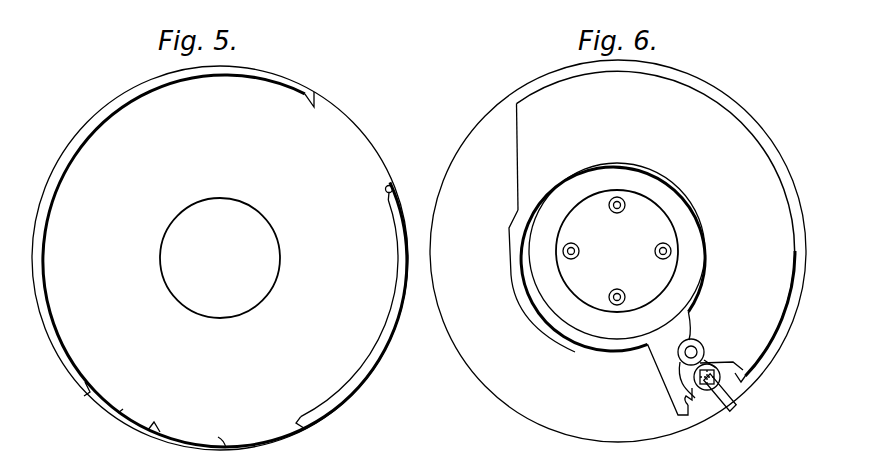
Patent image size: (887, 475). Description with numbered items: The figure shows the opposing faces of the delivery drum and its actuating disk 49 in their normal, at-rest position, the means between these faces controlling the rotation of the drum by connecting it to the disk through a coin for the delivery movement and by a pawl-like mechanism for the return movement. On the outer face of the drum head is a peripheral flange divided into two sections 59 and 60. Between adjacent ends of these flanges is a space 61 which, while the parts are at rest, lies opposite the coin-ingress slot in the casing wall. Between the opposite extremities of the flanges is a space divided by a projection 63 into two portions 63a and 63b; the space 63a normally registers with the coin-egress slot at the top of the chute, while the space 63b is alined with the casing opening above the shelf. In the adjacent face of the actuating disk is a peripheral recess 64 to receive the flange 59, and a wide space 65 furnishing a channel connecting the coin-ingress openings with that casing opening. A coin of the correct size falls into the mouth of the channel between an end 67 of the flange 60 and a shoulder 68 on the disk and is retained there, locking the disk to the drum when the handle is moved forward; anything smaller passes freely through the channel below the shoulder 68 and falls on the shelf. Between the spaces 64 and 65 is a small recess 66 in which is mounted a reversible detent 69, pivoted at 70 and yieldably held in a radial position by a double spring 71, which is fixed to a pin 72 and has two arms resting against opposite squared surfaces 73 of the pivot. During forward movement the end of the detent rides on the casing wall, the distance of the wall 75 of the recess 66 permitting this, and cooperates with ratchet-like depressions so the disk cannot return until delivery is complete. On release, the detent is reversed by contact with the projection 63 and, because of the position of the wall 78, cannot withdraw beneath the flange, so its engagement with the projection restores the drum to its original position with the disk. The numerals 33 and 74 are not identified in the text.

In FIG. 5, the band end notch 33 is at (306, 437).
In FIG. 5, the flange section 59 is at (90, 132).
In FIG. 5, the flange section 60 is at (383, 352).
In FIG. 5, the space 61 is at (362, 150).
In FIG. 5, the projection 63 is at (158, 427).
In FIG. 5, the space 63a is at (121, 410).
In FIG. 5, the space 63b is at (230, 454).
In FIG. 5, the end of flange 67 is at (392, 186).
In FIG. 5, the band step 74 is at (90, 388).
In FIG. 6, the actuating disk 49 is at (515, 136).
In FIG. 6, the peripheral recess 64 is at (733, 108).
In FIG. 6, the wide space 65 is at (486, 370).
In FIG. 6, the small recess 66 is at (707, 403).
In FIG. 6, the shoulder 68 is at (516, 212).
In FIG. 6, the reversible detent 69 is at (736, 405).
In FIG. 6, the pivot 70 is at (695, 378).
In FIG. 6, the double spring 71 is at (700, 360).
In FIG. 6, the pin 72 is at (691, 346).
In FIG. 6, the squared surfaces 73 is at (713, 362).
In FIG. 6, the wall of recess 75 is at (687, 420).
In FIG. 6, the wall of recess 78 is at (750, 381).